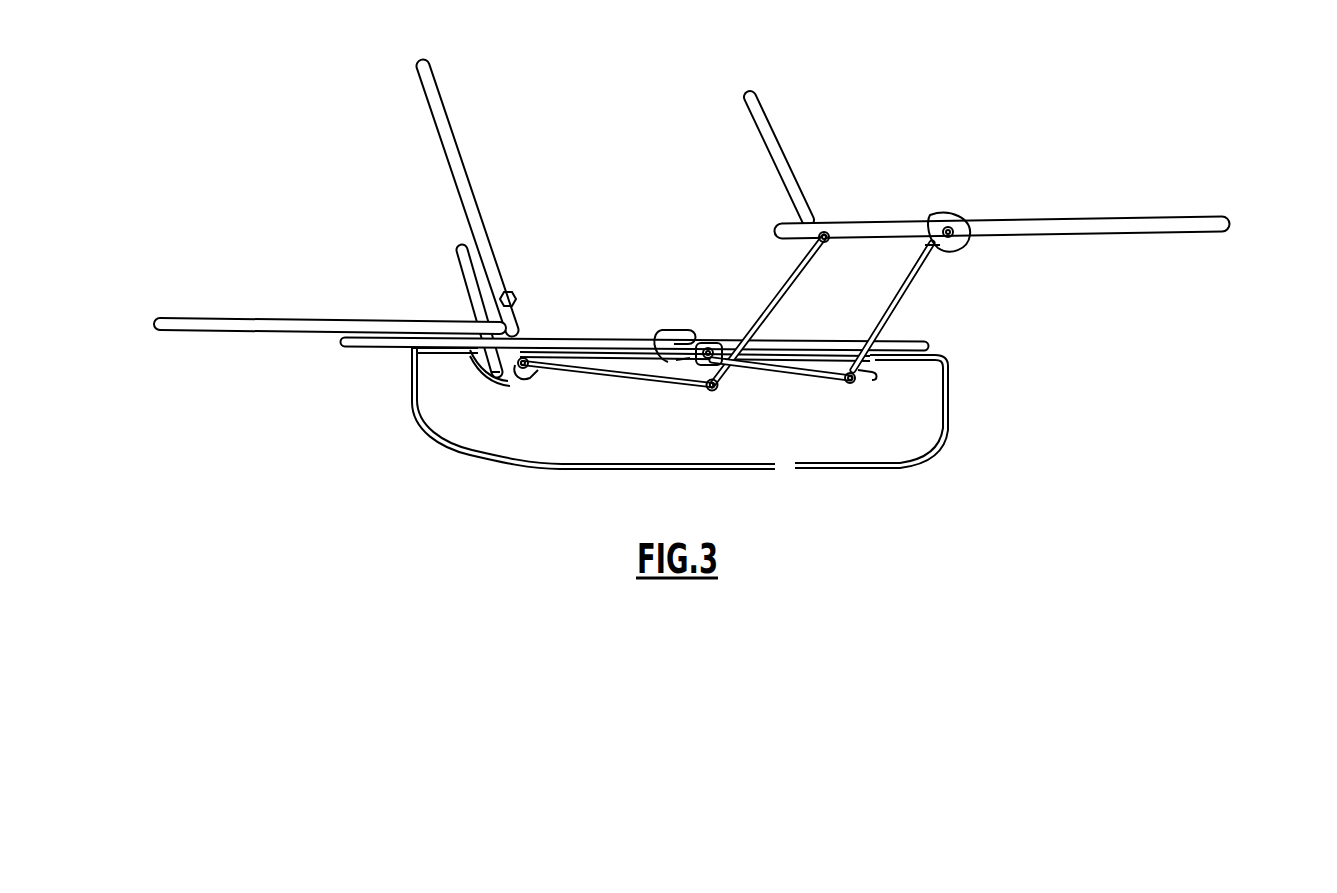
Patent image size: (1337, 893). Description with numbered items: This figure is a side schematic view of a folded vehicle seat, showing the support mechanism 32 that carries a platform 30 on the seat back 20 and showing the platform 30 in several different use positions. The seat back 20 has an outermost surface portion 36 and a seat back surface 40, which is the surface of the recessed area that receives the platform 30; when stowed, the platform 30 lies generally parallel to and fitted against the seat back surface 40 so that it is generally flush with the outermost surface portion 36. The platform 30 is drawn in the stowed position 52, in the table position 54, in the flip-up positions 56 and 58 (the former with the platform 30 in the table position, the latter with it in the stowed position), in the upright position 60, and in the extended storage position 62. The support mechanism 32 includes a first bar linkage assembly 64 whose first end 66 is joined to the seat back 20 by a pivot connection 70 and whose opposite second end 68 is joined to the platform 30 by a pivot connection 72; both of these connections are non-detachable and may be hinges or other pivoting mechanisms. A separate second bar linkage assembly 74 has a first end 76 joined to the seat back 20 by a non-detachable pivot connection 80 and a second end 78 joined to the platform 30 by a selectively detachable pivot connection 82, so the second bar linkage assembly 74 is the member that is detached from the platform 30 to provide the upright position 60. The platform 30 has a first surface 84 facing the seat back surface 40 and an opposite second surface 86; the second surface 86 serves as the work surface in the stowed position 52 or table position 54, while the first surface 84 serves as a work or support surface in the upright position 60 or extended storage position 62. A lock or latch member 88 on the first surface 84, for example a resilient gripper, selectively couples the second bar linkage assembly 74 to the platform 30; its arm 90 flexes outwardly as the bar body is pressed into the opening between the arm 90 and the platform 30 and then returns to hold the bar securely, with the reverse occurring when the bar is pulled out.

The seat back 20 is at (900, 448).
The platform 30 is at (455, 193).
The support mechanism 32 is at (982, 299).
The outermost surface portion 36 is at (414, 370).
The seat back surface 40 is at (955, 363).
The stowed position 52 is at (928, 345).
The table position 54 is at (1127, 212).
The flip-up position (table position) 56 is at (770, 120).
The flip-up position (stowed position) 58 is at (461, 281).
The upright position 60 is at (458, 143).
The extended storage position 62 is at (195, 308).
The first bar linkage assembly 64 is at (617, 376).
The first end 66 is at (707, 392).
The second end 68 is at (530, 372).
The pivot connection 70 is at (716, 392).
The pivot connection 72 is at (510, 377).
The second bar linkage assembly 74 is at (797, 368).
The first end 76 is at (836, 383).
The second end 78 is at (735, 366).
The pivot connection 80 is at (868, 380).
The pivot connection 82 is at (712, 343).
The first surface 84 is at (437, 78).
The second surface 86 is at (428, 108).
The lock or latch member 88 is at (668, 330).
The arm 90 is at (680, 362).